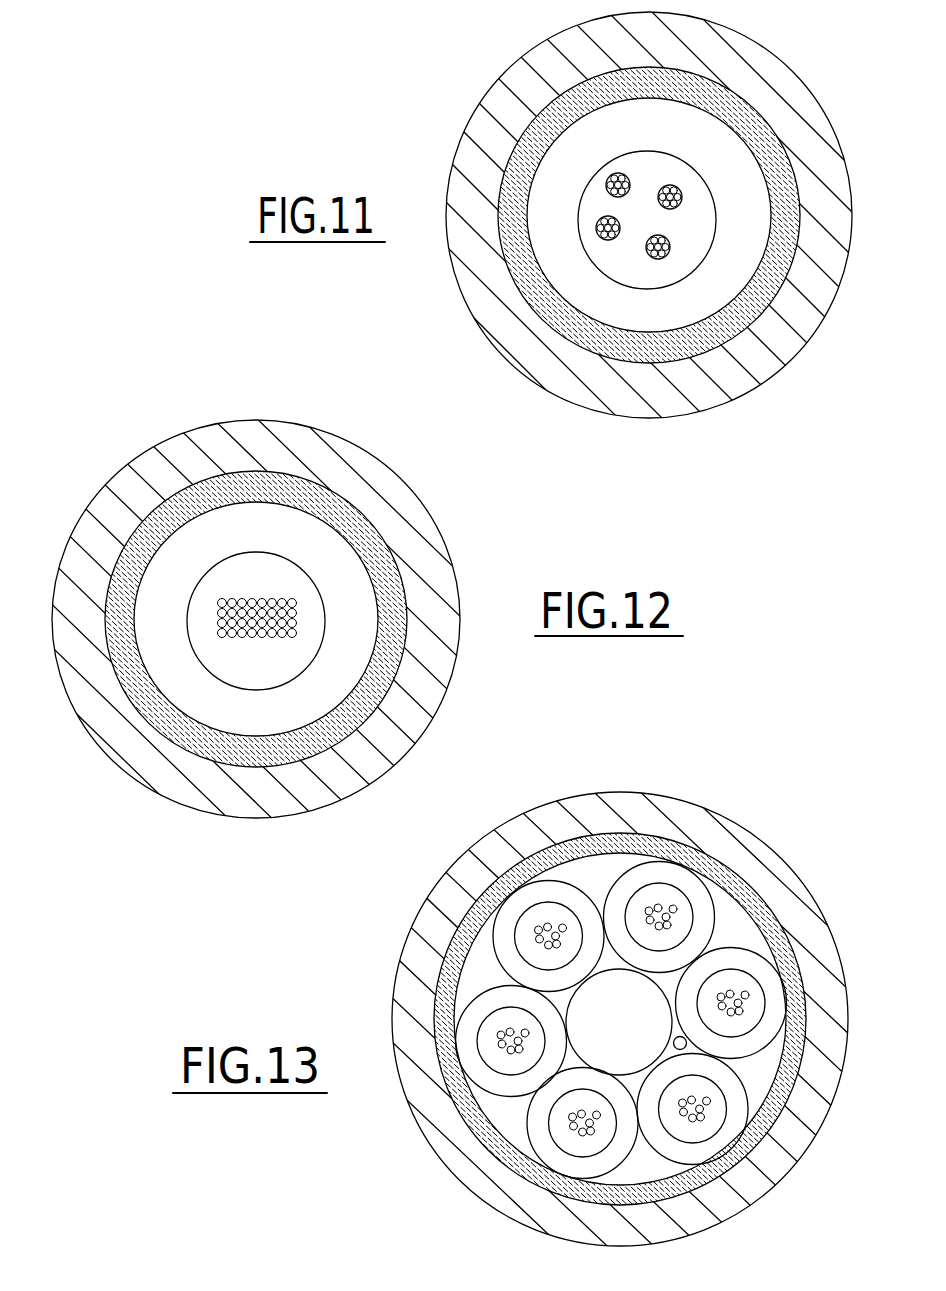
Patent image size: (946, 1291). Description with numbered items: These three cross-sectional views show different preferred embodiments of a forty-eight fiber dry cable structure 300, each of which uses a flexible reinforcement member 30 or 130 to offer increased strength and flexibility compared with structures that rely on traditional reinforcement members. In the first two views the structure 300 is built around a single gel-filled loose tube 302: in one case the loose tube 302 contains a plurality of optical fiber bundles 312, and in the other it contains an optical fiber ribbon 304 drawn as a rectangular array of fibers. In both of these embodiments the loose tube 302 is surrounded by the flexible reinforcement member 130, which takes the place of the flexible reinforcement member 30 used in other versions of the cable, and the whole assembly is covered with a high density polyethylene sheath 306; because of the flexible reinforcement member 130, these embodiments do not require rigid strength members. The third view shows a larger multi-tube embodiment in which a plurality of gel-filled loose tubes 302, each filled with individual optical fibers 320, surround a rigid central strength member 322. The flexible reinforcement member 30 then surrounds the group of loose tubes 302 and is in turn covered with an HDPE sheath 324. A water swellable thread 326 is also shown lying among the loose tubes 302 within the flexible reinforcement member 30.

In FIG. 11, the dry cable structure 300 is at (800, 53).
In FIG. 12, the dry cable structure 300 is at (491, 505).
In FIG. 13, the dry cable structure 300 is at (763, 789).
In FIG. 11, the gel-filled loose tube 302 is at (683, 272).
In FIG. 12, the gel-filled loose tube 302 is at (262, 556).
In FIG. 13, the gel-filled loose tube 302 is at (697, 893).
In FIG. 12, the optical fiber ribbon 304 is at (263, 640).
In FIG. 11, the HDPE sheath 306 is at (787, 348).
In FIG. 12, the HDPE sheath 306 is at (383, 480).
In FIG. 11, the flexible reinforcement member 130 is at (678, 348).
In FIG. 12, the flexible reinforcement member 130 is at (393, 583).
In FIG. 11, the optical fiber bundles 312 is at (617, 172).
In FIG. 13, the flexible reinforcement member 30 is at (528, 867).
In FIG. 13, the individual optical fibers 320 is at (670, 900).
In FIG. 13, the rigid central strength member 322 is at (645, 1021).
In FIG. 13, the HDPE sheath 324 is at (413, 947).
In FIG. 13, the water swellable thread 326 is at (687, 1044).